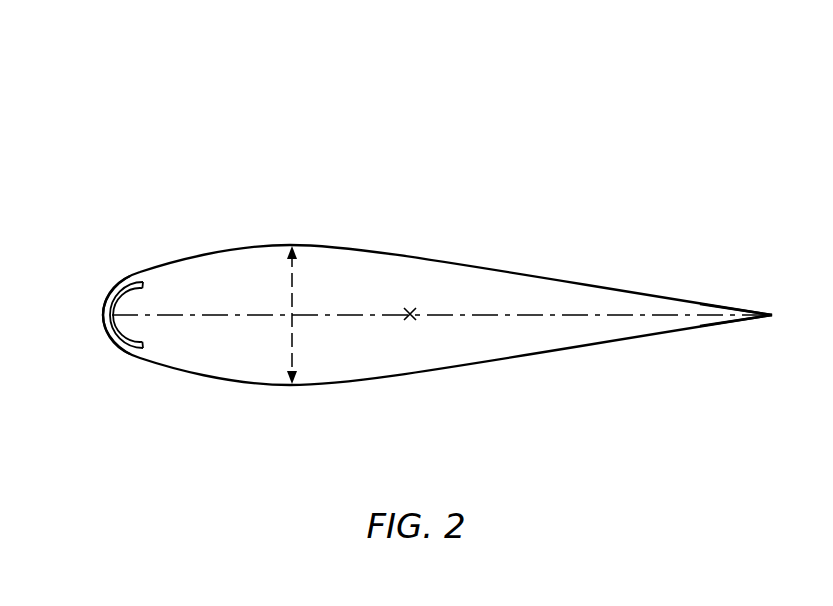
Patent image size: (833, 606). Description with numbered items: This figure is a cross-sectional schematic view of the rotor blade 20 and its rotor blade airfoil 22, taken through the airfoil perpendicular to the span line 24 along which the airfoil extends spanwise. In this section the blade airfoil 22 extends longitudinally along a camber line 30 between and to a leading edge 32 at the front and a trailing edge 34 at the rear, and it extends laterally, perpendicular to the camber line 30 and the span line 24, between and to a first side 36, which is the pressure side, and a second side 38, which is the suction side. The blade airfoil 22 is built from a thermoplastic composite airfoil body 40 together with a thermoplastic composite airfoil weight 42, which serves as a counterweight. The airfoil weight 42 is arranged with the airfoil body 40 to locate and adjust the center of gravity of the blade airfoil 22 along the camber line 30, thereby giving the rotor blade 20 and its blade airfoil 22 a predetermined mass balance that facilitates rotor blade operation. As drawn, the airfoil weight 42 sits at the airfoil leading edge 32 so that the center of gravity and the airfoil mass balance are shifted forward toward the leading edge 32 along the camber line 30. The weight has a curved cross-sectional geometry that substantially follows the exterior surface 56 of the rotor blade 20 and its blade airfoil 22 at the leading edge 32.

The rotor blade 20 is at (415, 256).
The rotor blade airfoil 22 is at (415, 256).
The span line 24 is at (412, 322).
The camber line 30 is at (507, 315).
The leading edge 32 is at (102, 315).
The trailing edge 34 is at (773, 316).
The first side 36 is at (275, 386).
The second side 38 is at (275, 245).
The thermoplastic composite airfoil body 40 is at (385, 252).
The thermoplastic composite airfoil weight 42 is at (88, 309).
The exterior surface 56 is at (108, 333).